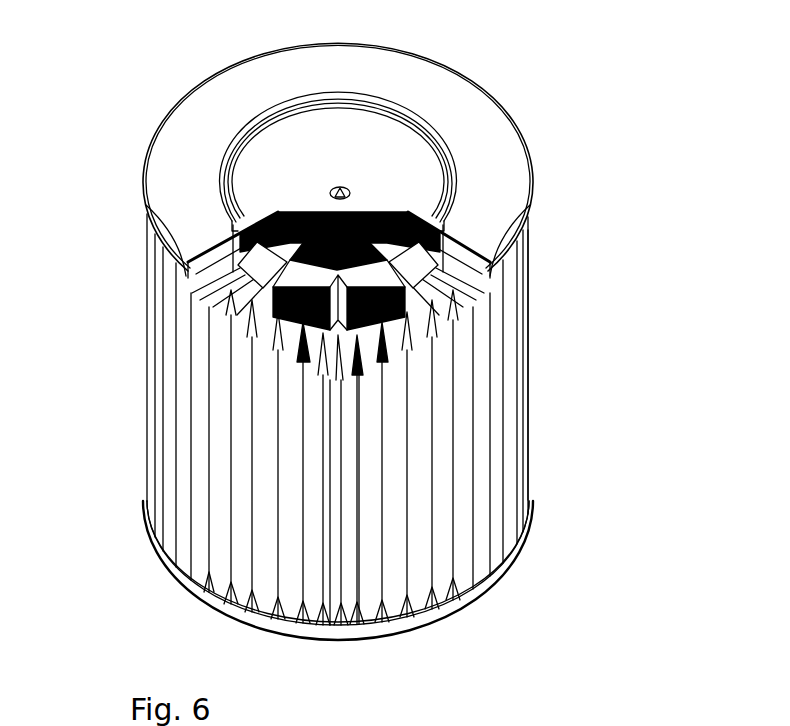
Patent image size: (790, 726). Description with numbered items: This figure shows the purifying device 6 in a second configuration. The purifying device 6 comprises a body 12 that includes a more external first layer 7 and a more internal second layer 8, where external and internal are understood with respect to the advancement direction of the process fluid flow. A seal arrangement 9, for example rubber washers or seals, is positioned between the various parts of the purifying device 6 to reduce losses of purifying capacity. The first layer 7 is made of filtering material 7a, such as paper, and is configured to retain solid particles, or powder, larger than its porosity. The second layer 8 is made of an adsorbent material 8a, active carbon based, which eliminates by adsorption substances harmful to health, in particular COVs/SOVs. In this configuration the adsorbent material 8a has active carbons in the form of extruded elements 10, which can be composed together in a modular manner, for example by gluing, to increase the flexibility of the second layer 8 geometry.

The purifying device 6 is at (165, 55).
The first layer 7 is at (152, 380).
The filtering material 7a is at (180, 540).
The second layer 8 is at (363, 212).
The adsorbent material 8a is at (305, 212).
The seal arrangement 9 is at (466, 126).
The extruded elements 10 is at (232, 262).
The body 12 is at (560, 352).